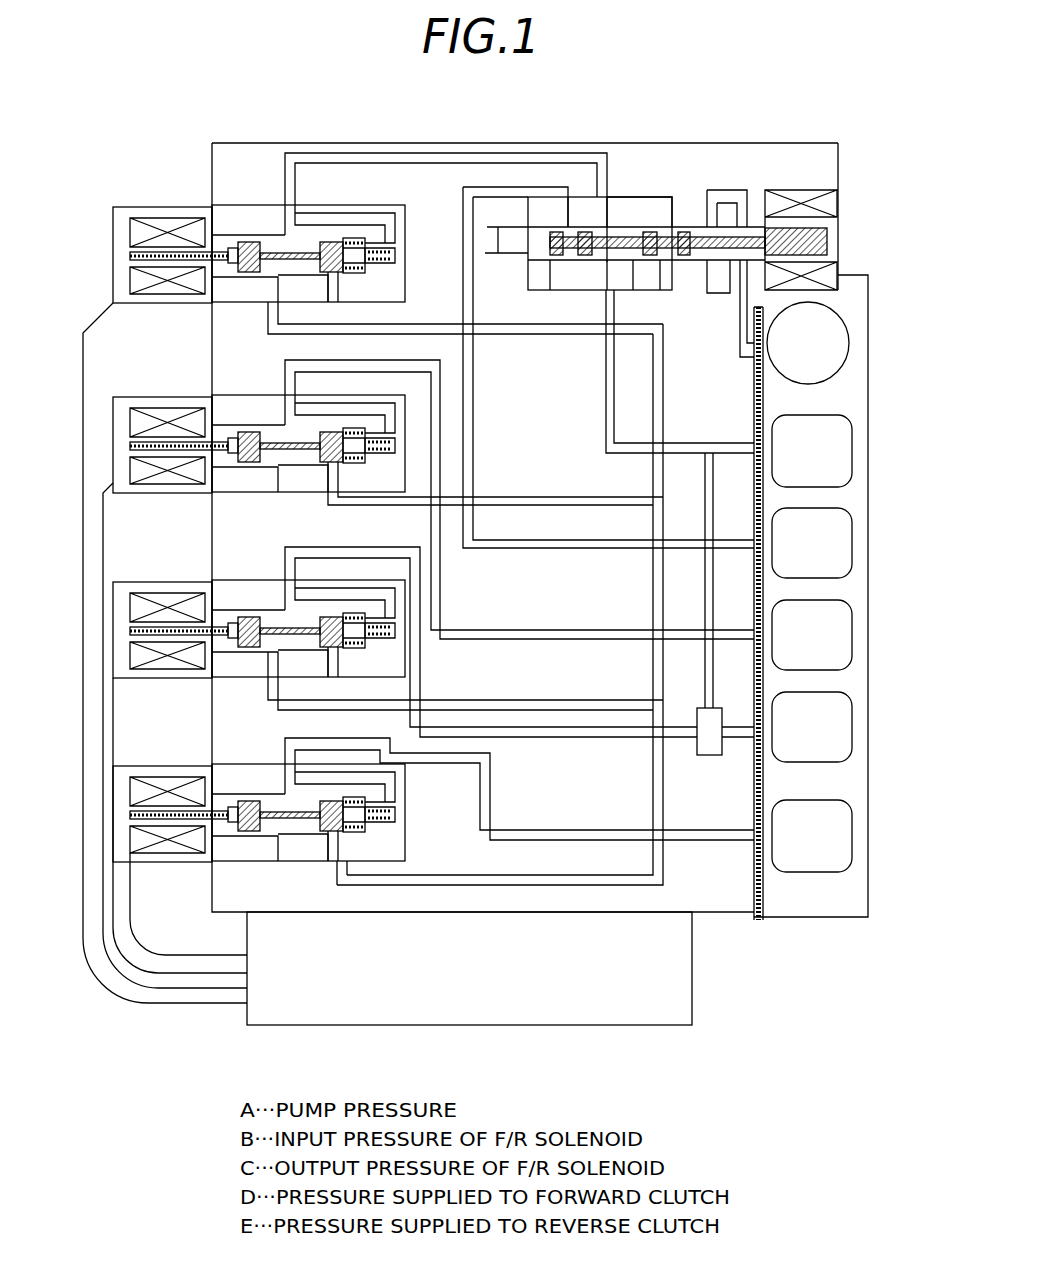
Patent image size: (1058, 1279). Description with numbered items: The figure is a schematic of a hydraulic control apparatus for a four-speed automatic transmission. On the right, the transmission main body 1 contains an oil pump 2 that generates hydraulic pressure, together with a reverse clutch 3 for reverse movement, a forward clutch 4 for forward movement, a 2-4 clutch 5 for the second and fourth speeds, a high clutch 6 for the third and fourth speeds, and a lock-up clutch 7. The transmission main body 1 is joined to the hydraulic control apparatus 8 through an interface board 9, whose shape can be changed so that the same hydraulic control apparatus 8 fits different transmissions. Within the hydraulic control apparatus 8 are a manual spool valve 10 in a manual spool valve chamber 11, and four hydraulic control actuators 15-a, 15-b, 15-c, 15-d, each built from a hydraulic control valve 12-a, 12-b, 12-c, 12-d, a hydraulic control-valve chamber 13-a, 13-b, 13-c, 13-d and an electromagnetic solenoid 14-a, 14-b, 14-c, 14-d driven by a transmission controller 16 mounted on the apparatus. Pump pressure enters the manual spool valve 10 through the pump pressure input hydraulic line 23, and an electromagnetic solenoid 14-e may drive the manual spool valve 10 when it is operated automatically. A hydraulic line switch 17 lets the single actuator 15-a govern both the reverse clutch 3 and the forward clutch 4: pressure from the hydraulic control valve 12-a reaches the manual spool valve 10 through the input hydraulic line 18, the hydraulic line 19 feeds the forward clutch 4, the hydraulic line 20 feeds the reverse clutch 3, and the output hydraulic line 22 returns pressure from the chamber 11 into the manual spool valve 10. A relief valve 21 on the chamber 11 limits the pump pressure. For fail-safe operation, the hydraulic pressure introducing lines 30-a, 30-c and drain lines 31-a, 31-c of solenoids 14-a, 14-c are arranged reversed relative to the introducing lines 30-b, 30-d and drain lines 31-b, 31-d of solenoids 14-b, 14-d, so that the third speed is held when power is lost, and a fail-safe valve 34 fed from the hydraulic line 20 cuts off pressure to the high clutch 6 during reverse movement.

The transmission main body 1 is at (845, 905).
The oil pump 2 is at (849, 335).
The reverse clutch 3 is at (852, 437).
The forward clutch 4 is at (852, 530).
The 2-4 clutch 5 is at (852, 622).
The high clutch 6 is at (852, 714).
The lock-up clutch 7 is at (852, 820).
The hydraulic control apparatus 8 is at (733, 900).
The interface board 9 is at (760, 920).
The manual spool valve 10 is at (828, 243).
The manual spool valve chamber 11 is at (500, 197).
The hydraulic control valve 12-a is at (250, 240).
The hydraulic control valve 12-b is at (240, 462).
The hydraulic control valve 12-c is at (240, 644).
The hydraulic control valve 12-d is at (240, 852).
The hydraulic control-valve chamber 13-a is at (223, 232).
The hydraulic control-valve chamber 13-b is at (228, 423).
The hydraulic control-valve chamber 13-c is at (226, 611).
The hydraulic control-valve chamber 13-d is at (230, 793).
The electromagnetic solenoid 14-a is at (133, 227).
The electromagnetic solenoid 14-b is at (133, 413).
The electromagnetic solenoid 14-c is at (133, 600).
The electromagnetic solenoid 14-d is at (133, 775).
The electromagnetic solenoid 14-e is at (790, 190).
The hydraulic control actuator 15-a is at (167, 207).
The hydraulic control actuator 15-b is at (167, 398).
The hydraulic control actuator 15-c is at (167, 585).
The hydraulic control actuator 15-d is at (167, 760).
The transmission controller 16 is at (530, 1025).
The hydraulic line switch 17 is at (660, 197).
The input hydraulic line 18 is at (607, 197).
The hydraulic line 19 is at (575, 197).
The hydraulic line 20 is at (607, 302).
The relief valve 21 is at (722, 293).
The output hydraulic line 22 is at (683, 285).
The pump pressure input hydraulic line 23 is at (717, 205).
The hydraulic pressure introducing line 30-a is at (273, 297).
The hydraulic pressure introducing line 30-b is at (265, 485).
The hydraulic pressure introducing line 30-c is at (267, 672).
The hydraulic pressure introducing line 30-d is at (265, 858).
The drain line 31-a is at (340, 297).
The drain line 31-b is at (345, 483).
The drain line 31-c is at (335, 698).
The drain line 31-d is at (347, 878).
The fail-safe valve 34 is at (712, 755).